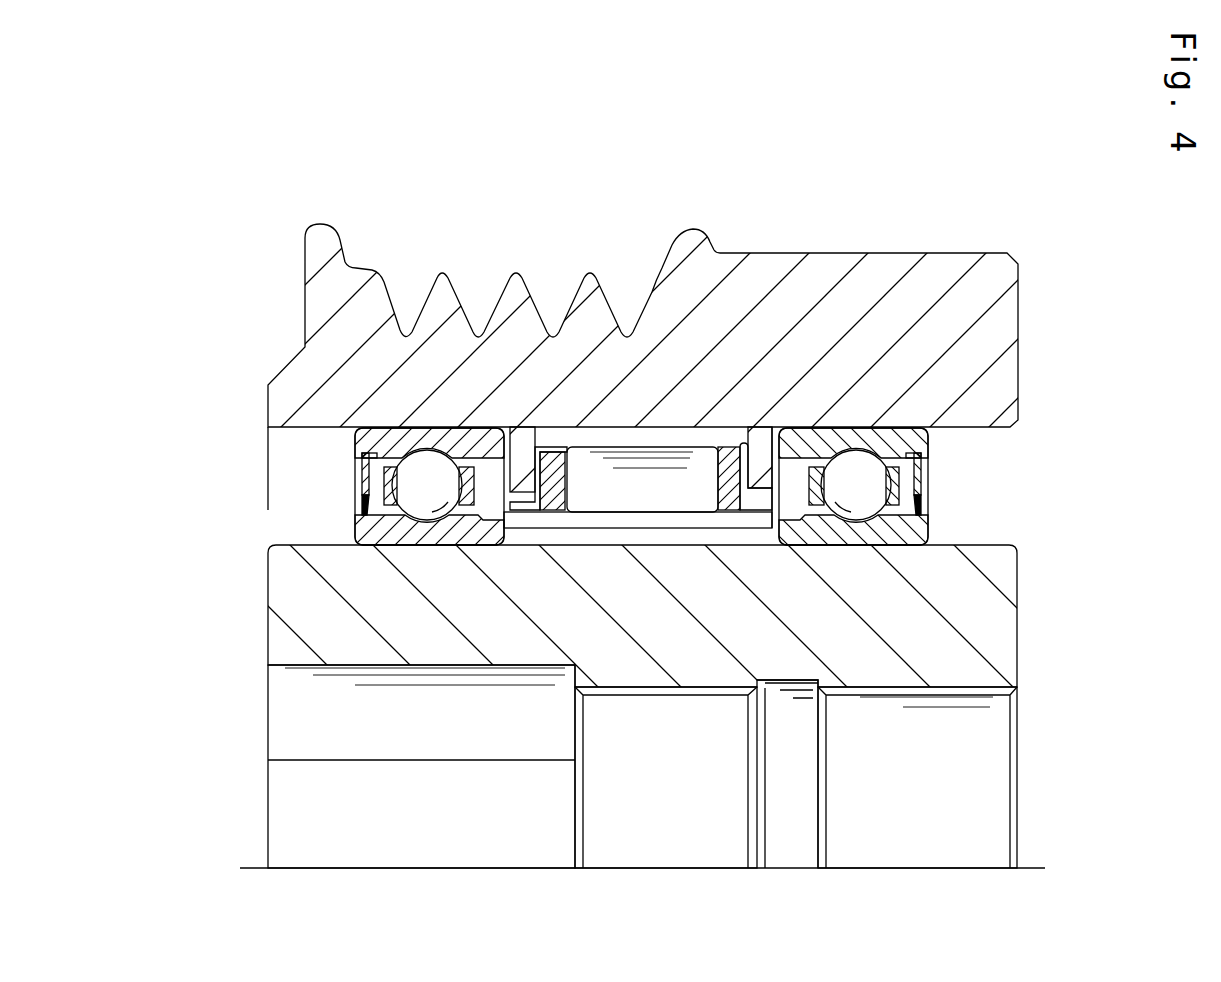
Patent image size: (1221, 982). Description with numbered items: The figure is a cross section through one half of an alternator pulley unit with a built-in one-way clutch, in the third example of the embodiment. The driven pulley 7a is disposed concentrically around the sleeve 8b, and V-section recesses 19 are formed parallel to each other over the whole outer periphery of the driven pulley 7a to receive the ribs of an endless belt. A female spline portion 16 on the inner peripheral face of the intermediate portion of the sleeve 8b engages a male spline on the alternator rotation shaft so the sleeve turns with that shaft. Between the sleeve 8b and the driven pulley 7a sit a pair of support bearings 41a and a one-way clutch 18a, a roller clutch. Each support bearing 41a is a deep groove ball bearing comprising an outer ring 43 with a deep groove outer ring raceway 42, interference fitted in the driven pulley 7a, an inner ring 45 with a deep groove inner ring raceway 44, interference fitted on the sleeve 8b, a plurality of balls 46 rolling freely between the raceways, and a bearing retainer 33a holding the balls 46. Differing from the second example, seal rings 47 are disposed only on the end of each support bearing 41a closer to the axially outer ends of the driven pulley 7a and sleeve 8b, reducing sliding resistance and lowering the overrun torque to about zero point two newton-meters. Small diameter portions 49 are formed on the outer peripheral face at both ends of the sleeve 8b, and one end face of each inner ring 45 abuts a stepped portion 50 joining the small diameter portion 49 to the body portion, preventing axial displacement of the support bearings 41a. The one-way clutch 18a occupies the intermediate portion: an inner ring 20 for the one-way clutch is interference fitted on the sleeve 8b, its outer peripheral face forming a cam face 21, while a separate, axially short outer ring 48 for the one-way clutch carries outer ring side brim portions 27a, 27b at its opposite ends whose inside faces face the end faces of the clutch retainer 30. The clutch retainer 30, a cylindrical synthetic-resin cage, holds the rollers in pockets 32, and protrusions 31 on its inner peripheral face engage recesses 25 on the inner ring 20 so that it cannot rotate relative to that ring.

The driven pulley 7a is at (800, 272).
The recesses 19 is at (392, 296).
The one-way clutch 18a is at (587, 450).
The outer ring for the one-way clutch 48 is at (640, 447).
The inner ring for the one-way clutch 20 is at (641, 520).
The cam face 21 is at (612, 525).
The recesses 25 is at (693, 522).
The outer ring side brim portion 27a is at (530, 478).
The outer ring side brim portion 27b is at (745, 445).
The clutch retainer 30 is at (545, 505).
The pockets 32 is at (725, 468).
The protrusions 31 is at (566, 535).
The support bearings 41a is at (393, 440).
The bearing retainer 33a is at (805, 455).
The outer ring raceway 42 is at (422, 462).
The outer ring 43 is at (400, 440).
The inner ring raceway 44 is at (424, 540).
The inner ring 45 is at (388, 530).
The balls 46 is at (410, 487).
The seal rings 47 is at (367, 472).
The small diameter portions 49 is at (340, 547).
The stepped portions 50 is at (476, 540).
The female spline portion 16 is at (650, 690).
The sleeve 8b is at (952, 678).